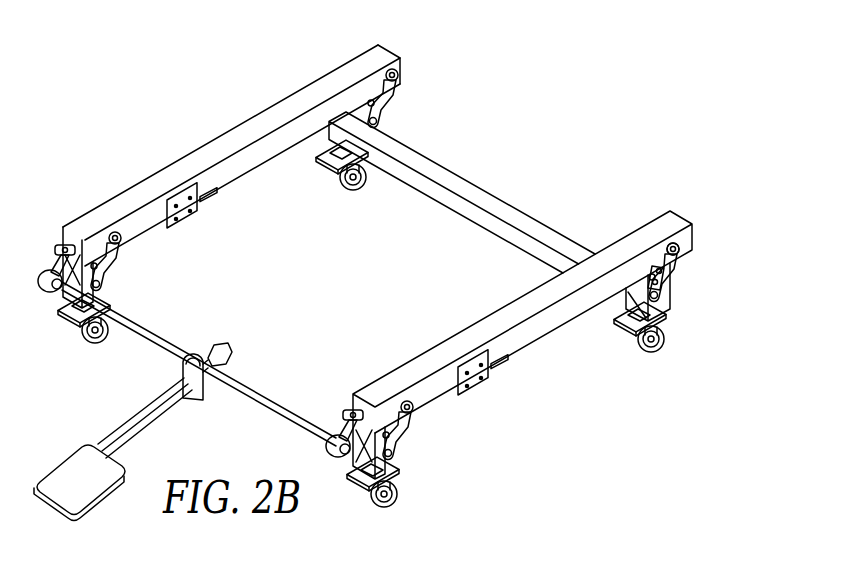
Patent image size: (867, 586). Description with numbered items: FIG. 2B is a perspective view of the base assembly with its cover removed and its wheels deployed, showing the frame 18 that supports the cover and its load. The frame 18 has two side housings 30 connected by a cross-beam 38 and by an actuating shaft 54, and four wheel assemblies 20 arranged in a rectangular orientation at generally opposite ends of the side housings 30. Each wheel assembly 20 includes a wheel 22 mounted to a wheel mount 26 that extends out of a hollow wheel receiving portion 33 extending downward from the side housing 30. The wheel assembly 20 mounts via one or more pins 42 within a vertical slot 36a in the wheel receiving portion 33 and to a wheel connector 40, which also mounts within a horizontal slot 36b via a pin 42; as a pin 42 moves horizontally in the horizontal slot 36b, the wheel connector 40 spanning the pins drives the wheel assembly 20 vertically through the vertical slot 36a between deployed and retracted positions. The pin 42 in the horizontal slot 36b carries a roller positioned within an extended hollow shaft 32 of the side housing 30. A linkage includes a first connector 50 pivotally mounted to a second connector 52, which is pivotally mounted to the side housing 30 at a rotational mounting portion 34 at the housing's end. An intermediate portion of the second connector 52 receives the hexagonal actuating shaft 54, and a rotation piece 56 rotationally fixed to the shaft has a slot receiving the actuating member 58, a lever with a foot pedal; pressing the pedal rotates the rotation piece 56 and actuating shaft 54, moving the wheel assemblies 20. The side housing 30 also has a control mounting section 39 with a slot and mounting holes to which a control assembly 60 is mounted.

The frame 18 is at (376, 239).
The wheel assembly 20 is at (676, 354).
The wheel 22 is at (343, 177).
The wheel mount 26 is at (670, 307).
The side housing 30 is at (180, 155).
The extended hollow shaft 32 is at (409, 61).
The wheel receiving portion 33 is at (411, 459).
The rotational mounting portion 34 is at (365, 470).
The vertical slot 36a is at (653, 282).
The horizontal slot 36b is at (675, 252).
The cross-beam 38 is at (452, 182).
The control mounting section 39 is at (508, 393).
The wheel connector 40 is at (673, 275).
The pin 42 is at (390, 72).
The first connector 50 is at (65, 232).
The second connector 52 is at (44, 270).
The actuating shaft 54 is at (133, 333).
The rotation piece 56 is at (210, 387).
The actuating member 58 is at (88, 505).
The control assembly 60 is at (183, 240).